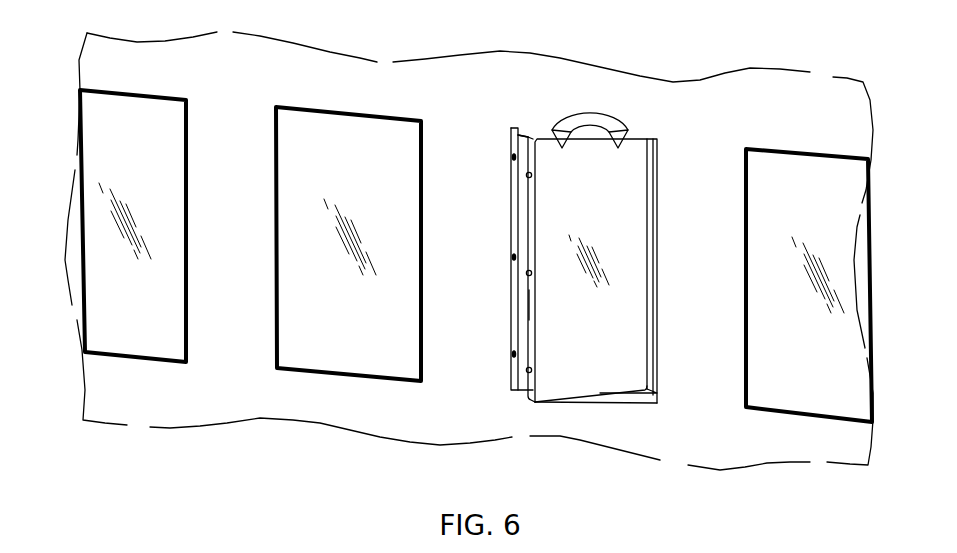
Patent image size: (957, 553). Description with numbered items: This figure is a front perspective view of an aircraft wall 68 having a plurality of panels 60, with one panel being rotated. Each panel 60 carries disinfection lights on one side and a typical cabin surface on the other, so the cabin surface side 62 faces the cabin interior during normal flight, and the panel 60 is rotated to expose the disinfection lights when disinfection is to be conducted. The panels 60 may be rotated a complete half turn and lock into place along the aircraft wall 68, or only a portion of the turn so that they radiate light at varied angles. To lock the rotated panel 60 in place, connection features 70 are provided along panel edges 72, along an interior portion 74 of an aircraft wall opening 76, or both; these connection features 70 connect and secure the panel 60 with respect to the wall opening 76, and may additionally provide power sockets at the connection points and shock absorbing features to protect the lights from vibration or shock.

The panel 60 is at (112, 152).
The cabin surface side 62 is at (589, 199).
The aircraft wall 68 is at (228, 87).
The connection features 70 is at (526, 175).
The panel edges 72 is at (535, 303).
The interior portion 74 is at (519, 138).
The aircraft wall opening 76 is at (514, 157).